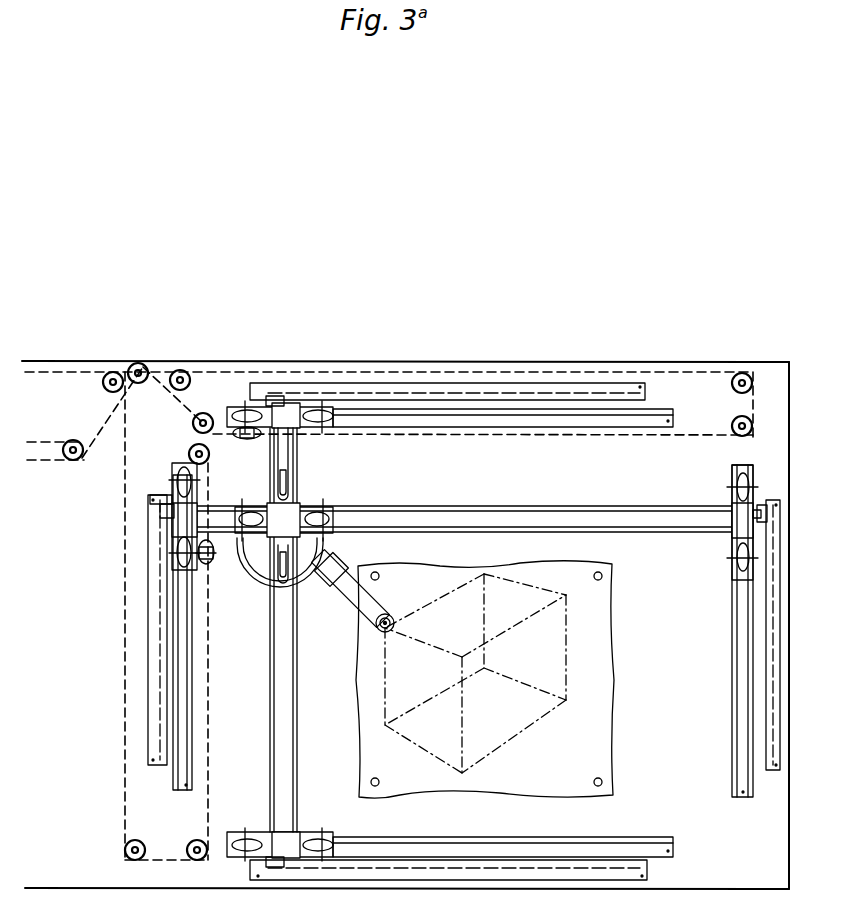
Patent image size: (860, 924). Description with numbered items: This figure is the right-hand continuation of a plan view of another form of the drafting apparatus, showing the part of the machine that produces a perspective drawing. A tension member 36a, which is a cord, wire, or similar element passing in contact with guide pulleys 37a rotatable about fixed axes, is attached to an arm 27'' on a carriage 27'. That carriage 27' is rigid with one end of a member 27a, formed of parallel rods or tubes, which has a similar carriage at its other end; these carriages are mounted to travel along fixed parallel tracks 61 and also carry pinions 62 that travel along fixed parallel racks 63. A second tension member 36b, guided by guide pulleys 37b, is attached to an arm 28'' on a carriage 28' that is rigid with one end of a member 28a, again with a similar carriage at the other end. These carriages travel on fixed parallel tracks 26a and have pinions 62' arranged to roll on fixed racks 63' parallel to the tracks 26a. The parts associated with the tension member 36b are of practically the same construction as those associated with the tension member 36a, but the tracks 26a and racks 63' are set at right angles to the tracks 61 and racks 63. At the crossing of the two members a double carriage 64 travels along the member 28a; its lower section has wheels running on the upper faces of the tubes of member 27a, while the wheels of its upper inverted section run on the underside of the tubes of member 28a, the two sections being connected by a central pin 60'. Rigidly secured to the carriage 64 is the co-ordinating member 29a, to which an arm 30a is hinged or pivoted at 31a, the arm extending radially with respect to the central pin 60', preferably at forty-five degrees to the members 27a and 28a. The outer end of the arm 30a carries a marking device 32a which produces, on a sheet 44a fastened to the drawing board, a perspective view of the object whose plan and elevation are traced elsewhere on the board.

The tension member 36a is at (57, 362).
The tension member 36b is at (44, 372).
The guide pulleys 37a is at (146, 368).
The guide pulleys 37b is at (187, 848).
The pinions 62 is at (248, 629).
The racks 63 is at (468, 631).
The tracks 61 is at (477, 423).
The carriage 27' is at (289, 631).
The arm 27'' is at (246, 448).
The central pin 60' is at (283, 510).
The double carriage 64 is at (289, 500).
The member 28a is at (440, 507).
The pinions 62' is at (425, 498).
The carriage 28' is at (414, 521).
The pivot 31a is at (340, 566).
The arm 28'' is at (218, 564).
The co-ordinating member 29a is at (262, 584).
The arm 30a is at (341, 589).
The marking device 32a is at (378, 630).
The tracks 26a is at (192, 677).
The member 27a is at (297, 698).
The sheet 44a is at (485, 679).
The racks 63' is at (428, 632).